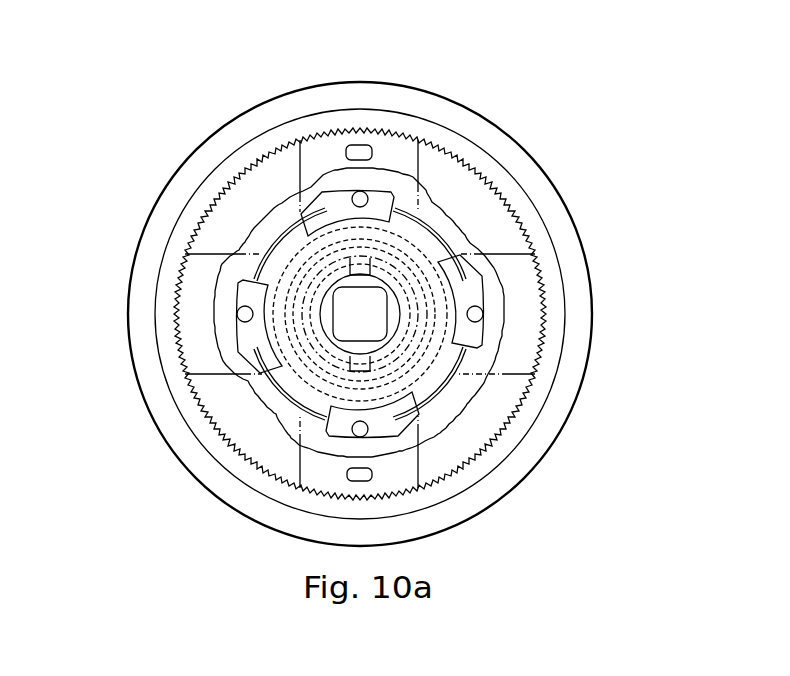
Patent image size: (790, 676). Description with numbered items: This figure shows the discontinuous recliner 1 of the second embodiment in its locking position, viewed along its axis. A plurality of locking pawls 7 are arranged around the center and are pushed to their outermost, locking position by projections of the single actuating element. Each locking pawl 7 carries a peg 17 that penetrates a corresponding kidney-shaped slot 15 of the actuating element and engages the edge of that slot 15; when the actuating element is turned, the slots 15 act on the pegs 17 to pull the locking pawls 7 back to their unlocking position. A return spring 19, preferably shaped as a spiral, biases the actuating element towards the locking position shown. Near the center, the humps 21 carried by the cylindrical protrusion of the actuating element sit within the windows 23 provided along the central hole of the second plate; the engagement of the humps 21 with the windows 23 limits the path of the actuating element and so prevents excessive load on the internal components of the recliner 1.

The discontinuous recliner 1 is at (560, 108).
The locking pawl 7 is at (385, 147).
The kidney-shaped slot 15 is at (318, 178).
The peg 17 is at (366, 197).
The return spring 19 is at (430, 395).
The hump 21 is at (335, 272).
The window 23 is at (406, 262).